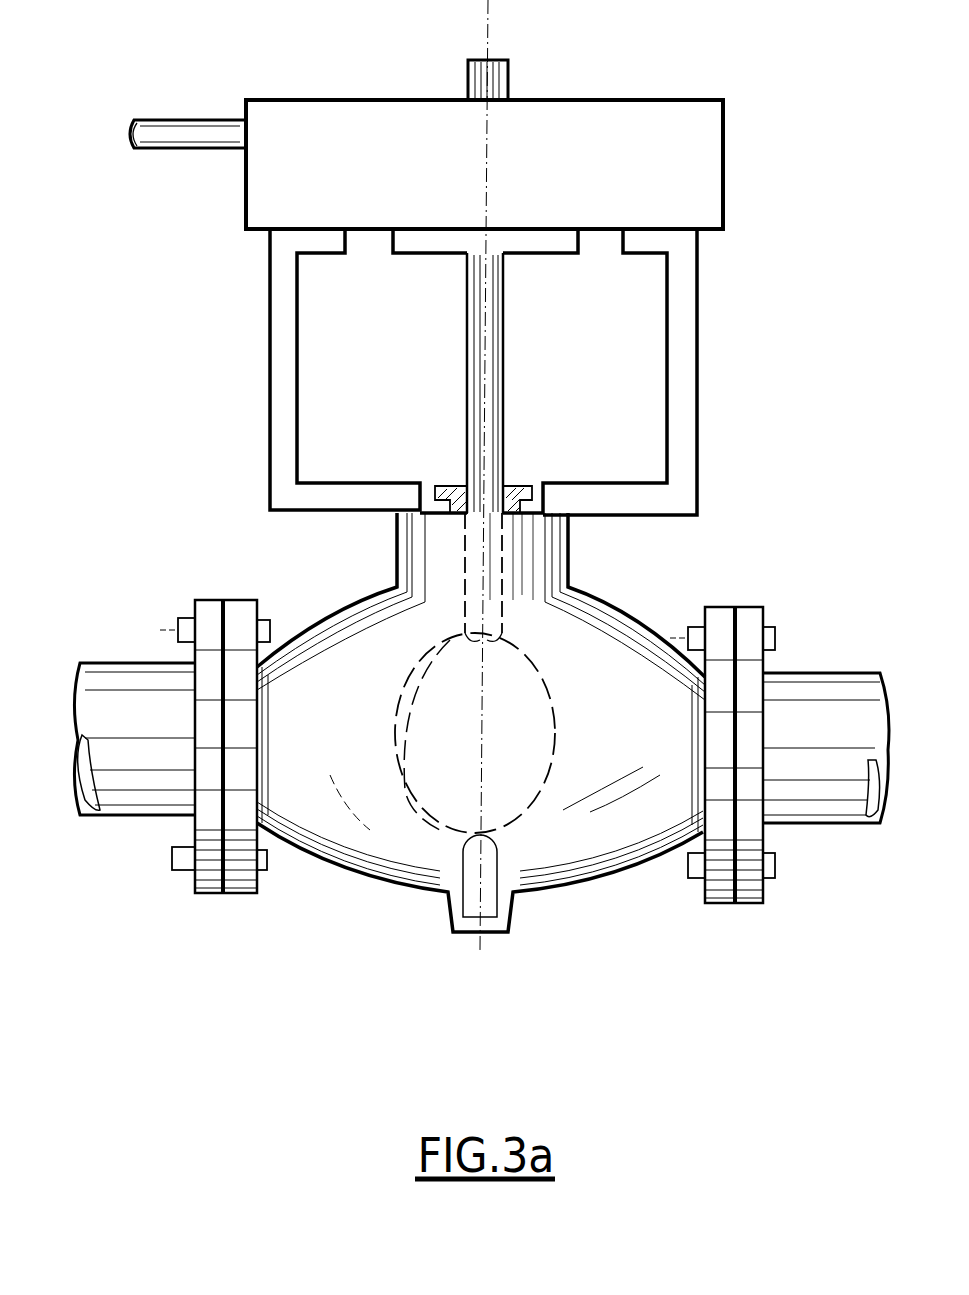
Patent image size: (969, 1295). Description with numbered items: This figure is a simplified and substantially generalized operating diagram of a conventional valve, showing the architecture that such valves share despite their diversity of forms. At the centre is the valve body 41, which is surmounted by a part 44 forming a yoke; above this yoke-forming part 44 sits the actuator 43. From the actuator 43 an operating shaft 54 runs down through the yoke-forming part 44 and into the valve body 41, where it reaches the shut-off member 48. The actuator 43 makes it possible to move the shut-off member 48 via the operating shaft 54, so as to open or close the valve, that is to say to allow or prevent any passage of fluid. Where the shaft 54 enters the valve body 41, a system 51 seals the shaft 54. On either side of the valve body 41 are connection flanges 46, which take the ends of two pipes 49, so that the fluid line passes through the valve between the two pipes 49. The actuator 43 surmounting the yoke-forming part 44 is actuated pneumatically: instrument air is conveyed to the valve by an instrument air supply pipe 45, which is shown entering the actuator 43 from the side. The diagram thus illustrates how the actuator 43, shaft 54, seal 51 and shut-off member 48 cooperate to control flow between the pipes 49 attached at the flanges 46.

The valve body 41 is at (382, 767).
The actuator 43 is at (417, 137).
The yoke-forming part 44 is at (283, 386).
The instrument air supply pipe 45 is at (208, 133).
The connection flanges 46 is at (242, 627).
The shut-off member 48 is at (515, 755).
The pipes 49 is at (142, 763).
The sealing system 51 is at (518, 483).
The operating shaft 54 is at (488, 375).